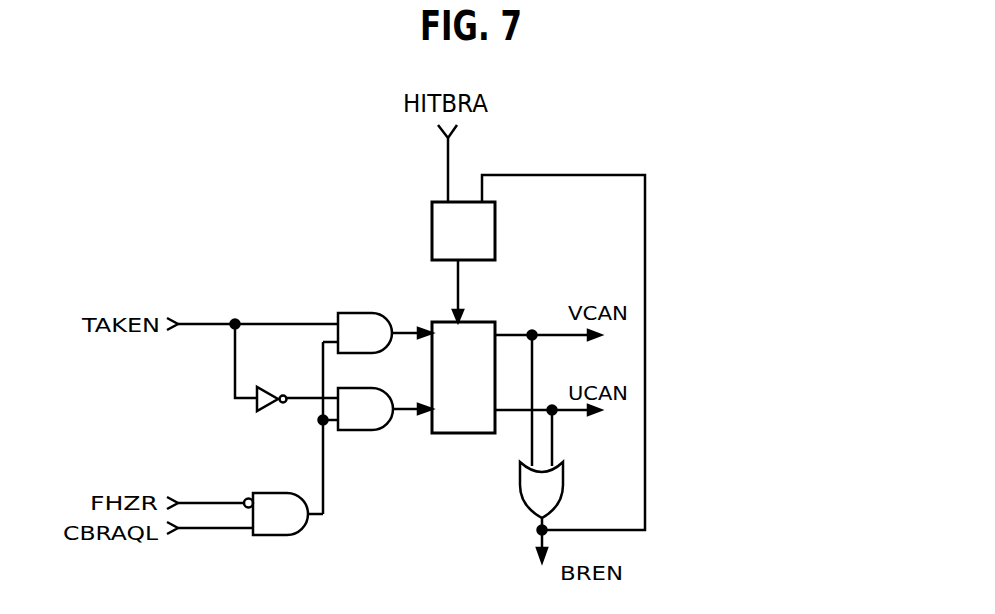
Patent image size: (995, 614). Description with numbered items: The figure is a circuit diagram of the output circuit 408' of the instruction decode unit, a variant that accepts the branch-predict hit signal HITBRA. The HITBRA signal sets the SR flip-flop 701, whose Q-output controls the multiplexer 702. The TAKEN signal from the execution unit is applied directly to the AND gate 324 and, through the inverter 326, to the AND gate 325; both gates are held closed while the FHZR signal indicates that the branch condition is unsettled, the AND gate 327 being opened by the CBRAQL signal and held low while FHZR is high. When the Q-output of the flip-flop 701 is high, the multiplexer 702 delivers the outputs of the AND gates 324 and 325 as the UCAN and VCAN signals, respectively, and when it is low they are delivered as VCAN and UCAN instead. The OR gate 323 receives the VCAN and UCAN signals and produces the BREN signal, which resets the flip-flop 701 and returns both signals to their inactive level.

The output circuit 408' is at (569, 317).
The SR flip-flop 701 is at (485, 236).
The multiplexer 702 is at (475, 328).
The AND gate 324 is at (360, 317).
The AND gate 325 is at (370, 418).
The inverter 326 is at (265, 408).
The AND gate 327 is at (280, 528).
The OR gate 323 is at (562, 482).